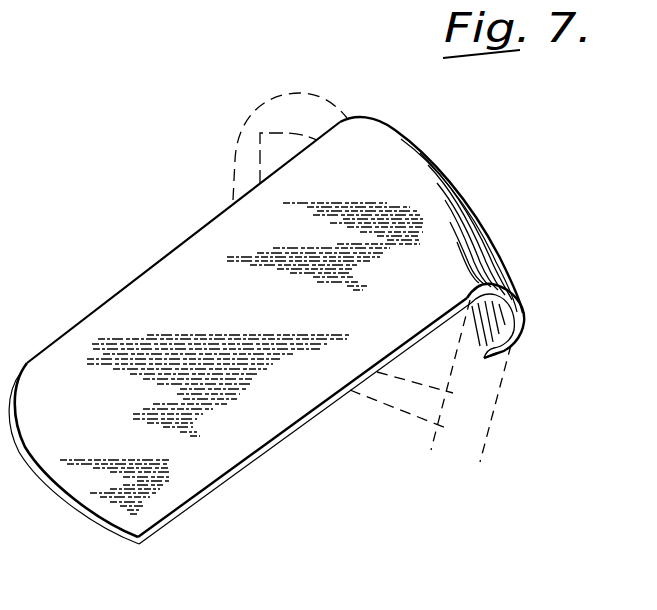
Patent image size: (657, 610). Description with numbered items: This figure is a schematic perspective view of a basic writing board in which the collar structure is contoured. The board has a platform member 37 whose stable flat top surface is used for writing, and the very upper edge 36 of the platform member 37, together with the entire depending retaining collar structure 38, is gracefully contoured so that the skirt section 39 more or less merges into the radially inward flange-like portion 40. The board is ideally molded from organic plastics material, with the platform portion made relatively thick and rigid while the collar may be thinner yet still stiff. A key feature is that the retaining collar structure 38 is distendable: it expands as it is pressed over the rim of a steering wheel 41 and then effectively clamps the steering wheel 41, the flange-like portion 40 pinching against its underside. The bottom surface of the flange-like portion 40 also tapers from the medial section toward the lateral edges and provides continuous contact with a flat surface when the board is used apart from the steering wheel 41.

The upper edge 36 is at (393, 160).
The platform member 37 is at (227, 311).
The retaining collar structure 38 is at (507, 297).
The skirt section 39 is at (477, 250).
The flange-like portion 40 is at (493, 357).
The steering wheel 41 is at (483, 410).